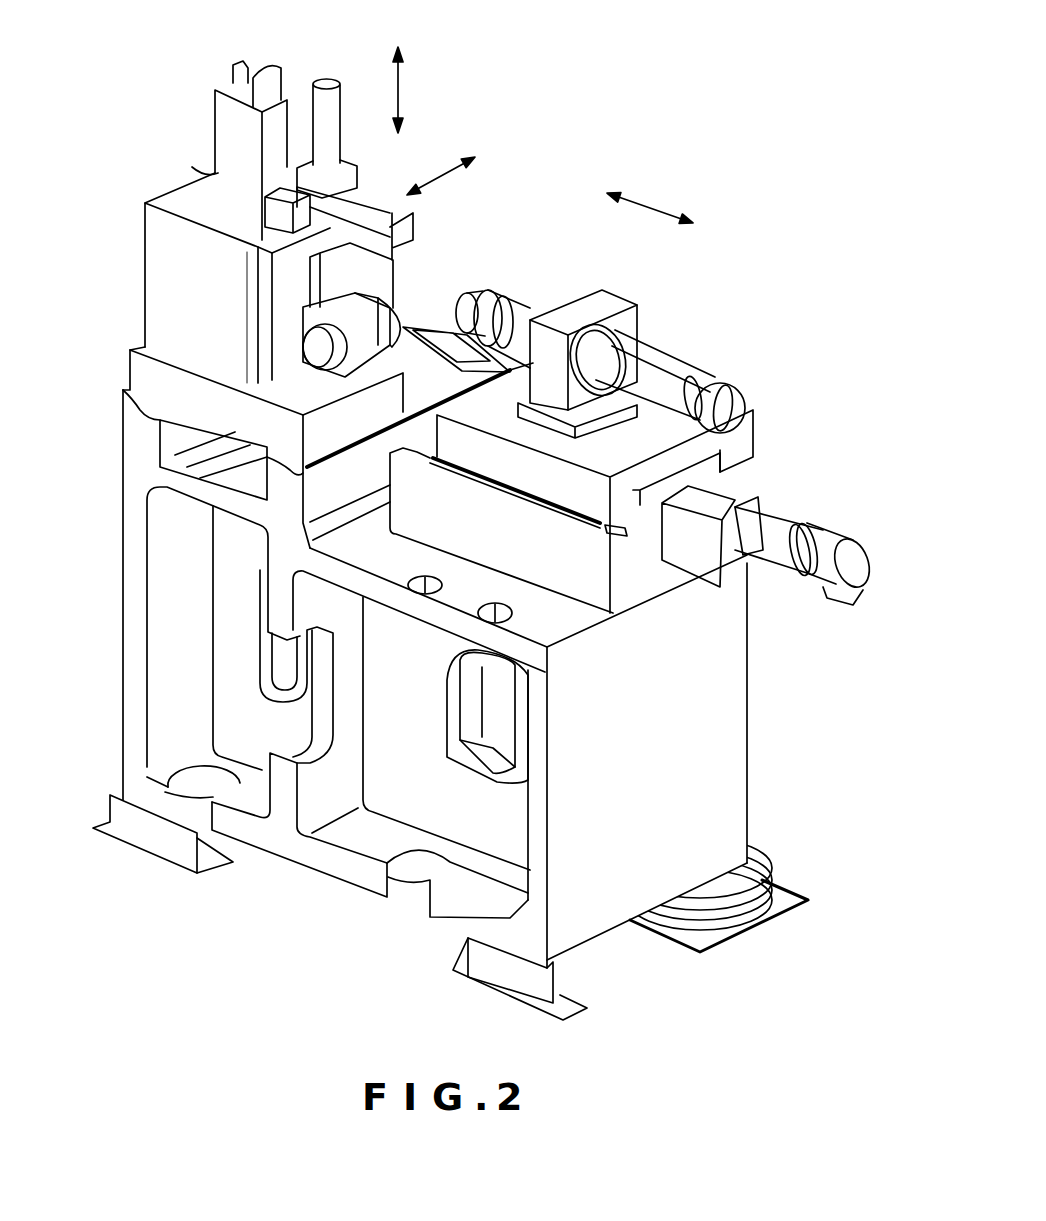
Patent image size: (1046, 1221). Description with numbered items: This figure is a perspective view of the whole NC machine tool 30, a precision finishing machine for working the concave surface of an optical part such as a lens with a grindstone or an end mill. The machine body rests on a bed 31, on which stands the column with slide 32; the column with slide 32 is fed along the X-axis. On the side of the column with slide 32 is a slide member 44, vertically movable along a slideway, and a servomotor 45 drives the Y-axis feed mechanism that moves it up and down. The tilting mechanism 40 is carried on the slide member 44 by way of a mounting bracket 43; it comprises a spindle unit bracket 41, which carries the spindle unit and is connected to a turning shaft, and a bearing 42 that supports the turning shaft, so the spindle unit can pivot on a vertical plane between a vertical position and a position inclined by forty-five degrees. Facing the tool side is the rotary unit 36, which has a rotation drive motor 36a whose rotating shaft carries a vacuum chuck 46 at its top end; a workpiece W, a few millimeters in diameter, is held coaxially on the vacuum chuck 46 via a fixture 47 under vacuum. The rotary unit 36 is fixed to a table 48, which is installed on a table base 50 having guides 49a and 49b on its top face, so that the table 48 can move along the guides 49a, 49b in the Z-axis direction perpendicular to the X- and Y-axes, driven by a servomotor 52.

The NC machine tool 30 is at (571, 174).
The bed 31 is at (731, 702).
The column with slide 32 is at (158, 230).
The rotary unit 36 is at (665, 315).
The rotation drive motor 36a is at (690, 357).
The tilting mechanism 40 is at (286, 275).
The spindle unit bracket 41 is at (405, 305).
The bearing 42 is at (360, 350).
The mounting bracket 43 is at (363, 273).
The slide member 44 is at (260, 322).
The servomotor 45 is at (238, 122).
The vacuum chuck 46 is at (535, 297).
The fixture 47 is at (497, 300).
The table 48 is at (745, 435).
The guide 49a is at (765, 472).
The guide 49b is at (607, 540).
The table base 50 is at (590, 577).
The servomotor 52 is at (788, 510).
The workpiece W is at (468, 295).